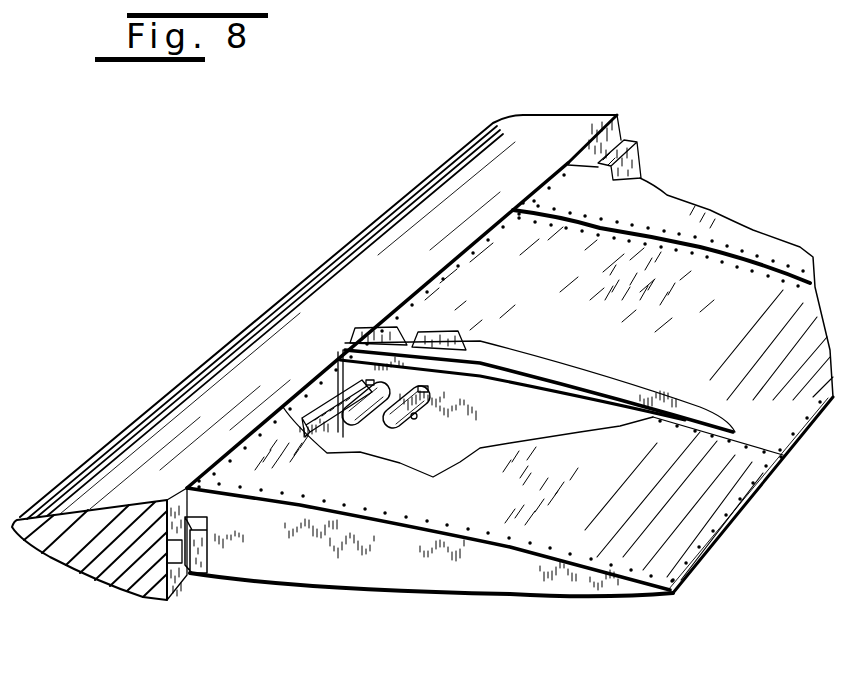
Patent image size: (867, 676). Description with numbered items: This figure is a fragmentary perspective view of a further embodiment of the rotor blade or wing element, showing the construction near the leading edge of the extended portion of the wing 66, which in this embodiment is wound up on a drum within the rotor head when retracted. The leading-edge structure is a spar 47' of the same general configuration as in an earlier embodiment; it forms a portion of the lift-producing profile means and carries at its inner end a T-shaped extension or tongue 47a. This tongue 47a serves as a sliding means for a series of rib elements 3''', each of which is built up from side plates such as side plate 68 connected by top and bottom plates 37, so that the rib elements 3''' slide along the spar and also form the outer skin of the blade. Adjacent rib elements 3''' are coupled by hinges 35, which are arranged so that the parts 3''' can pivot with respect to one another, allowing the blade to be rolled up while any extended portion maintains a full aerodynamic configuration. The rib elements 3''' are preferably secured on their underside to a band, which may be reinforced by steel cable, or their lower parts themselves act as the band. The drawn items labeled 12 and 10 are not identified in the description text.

The extended portion of the wing 66 is at (295, 285).
The spar 47' is at (99, 561).
The T-shaped extension or tongue 47a is at (208, 562).
The rib element 3''' is at (498, 390).
The hinge 35 is at (378, 384).
The hinge bearing 12 is at (432, 417).
The top and bottom plates 37 is at (432, 478).
The lower skin 10 is at (596, 421).
The side plate 68 is at (509, 585).